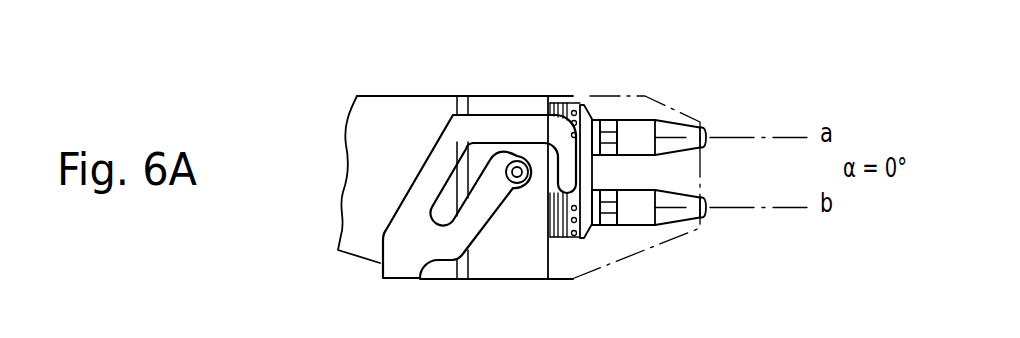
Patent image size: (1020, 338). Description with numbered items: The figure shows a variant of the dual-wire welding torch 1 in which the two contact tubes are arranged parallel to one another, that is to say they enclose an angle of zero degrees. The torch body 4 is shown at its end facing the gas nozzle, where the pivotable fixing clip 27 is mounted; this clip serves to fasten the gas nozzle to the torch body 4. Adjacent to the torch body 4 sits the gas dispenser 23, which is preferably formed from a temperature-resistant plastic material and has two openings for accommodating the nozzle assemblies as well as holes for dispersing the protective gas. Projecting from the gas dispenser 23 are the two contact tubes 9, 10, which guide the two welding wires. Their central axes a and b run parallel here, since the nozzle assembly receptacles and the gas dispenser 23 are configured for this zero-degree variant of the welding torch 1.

The dual-wire welding torch 1 is at (281, 58).
The torch body 4 is at (392, 148).
The pivotable fixing clip 27 is at (487, 128).
The gas dispenser 23 is at (573, 112).
The contact tube 9 is at (665, 130).
The contact tube 10 is at (667, 213).